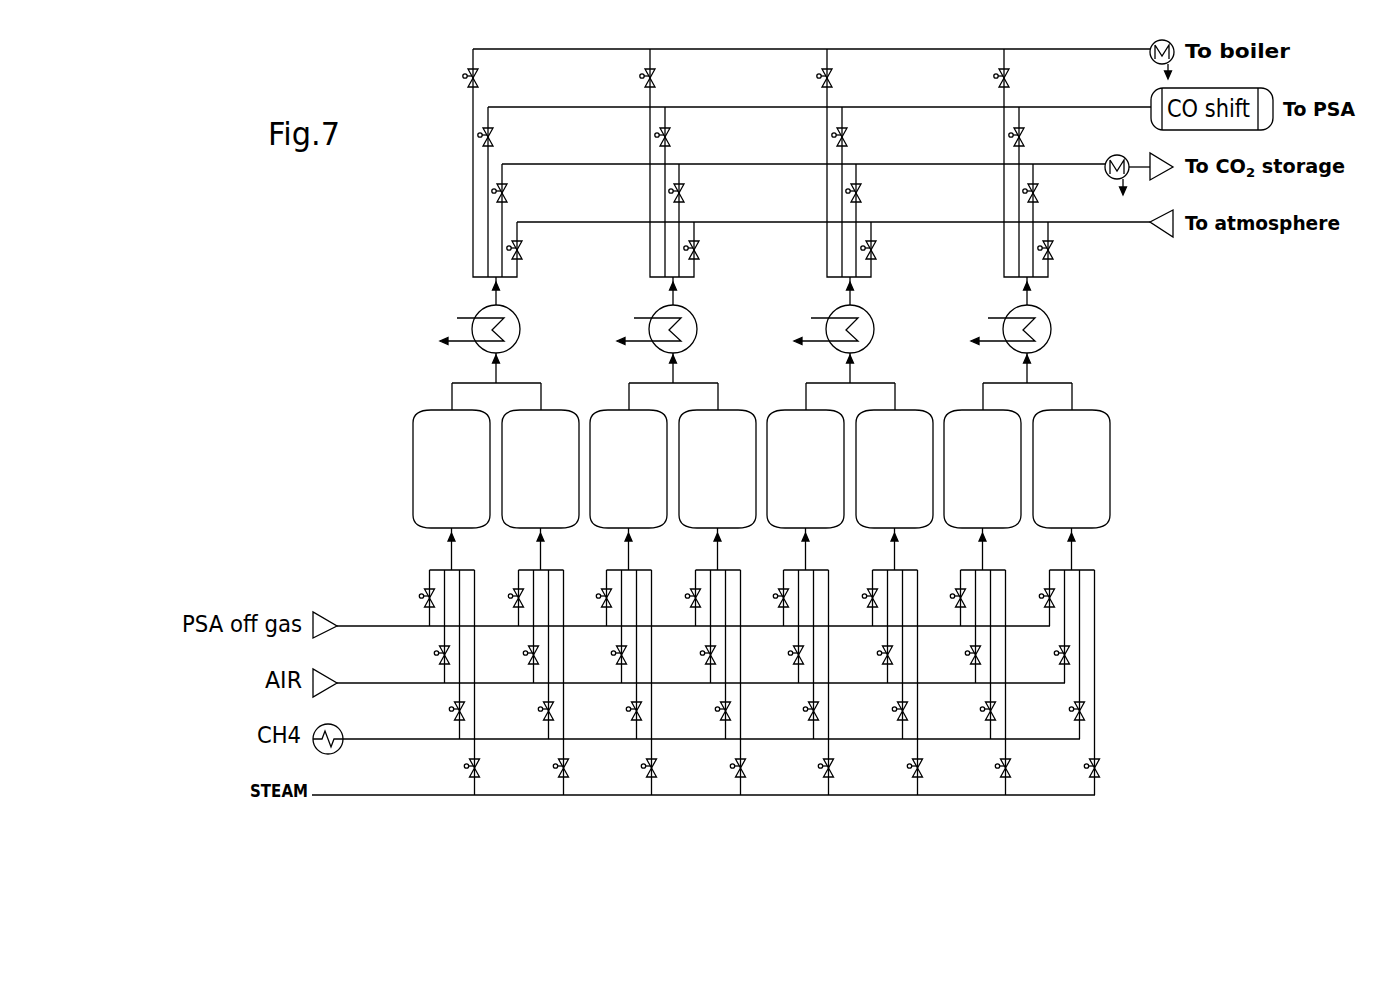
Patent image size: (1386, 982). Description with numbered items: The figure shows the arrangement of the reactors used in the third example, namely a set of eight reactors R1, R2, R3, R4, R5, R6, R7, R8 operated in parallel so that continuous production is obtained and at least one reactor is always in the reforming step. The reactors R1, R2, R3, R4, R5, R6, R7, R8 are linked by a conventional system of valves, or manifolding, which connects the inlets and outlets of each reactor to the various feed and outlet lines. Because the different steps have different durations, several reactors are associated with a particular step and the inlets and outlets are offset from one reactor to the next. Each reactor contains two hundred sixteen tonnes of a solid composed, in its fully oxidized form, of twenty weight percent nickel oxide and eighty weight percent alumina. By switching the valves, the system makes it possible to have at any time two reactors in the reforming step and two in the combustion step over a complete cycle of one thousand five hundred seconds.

The reactor R1 is at (451, 469).
The reactor R2 is at (540, 469).
The reactor R3 is at (628, 469).
The reactor R4 is at (717, 469).
The reactor R5 is at (805, 469).
The reactor R6 is at (894, 469).
The reactor R7 is at (982, 469).
The reactor R8 is at (1071, 469).